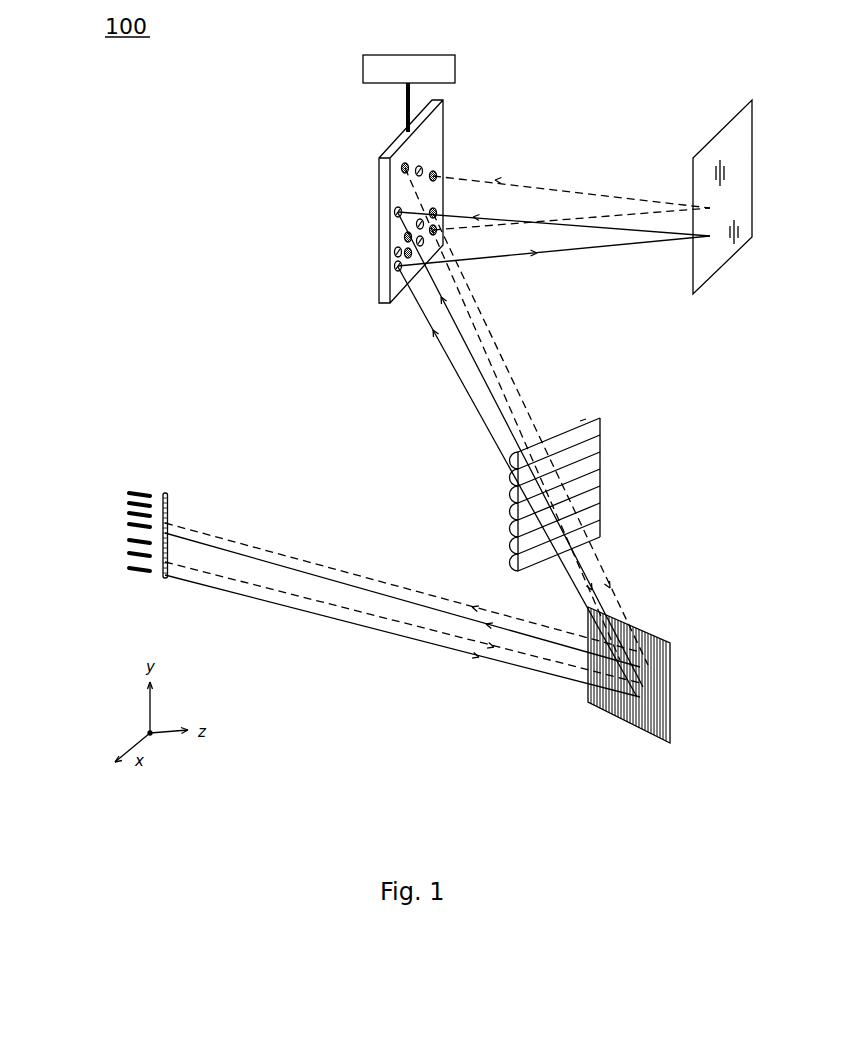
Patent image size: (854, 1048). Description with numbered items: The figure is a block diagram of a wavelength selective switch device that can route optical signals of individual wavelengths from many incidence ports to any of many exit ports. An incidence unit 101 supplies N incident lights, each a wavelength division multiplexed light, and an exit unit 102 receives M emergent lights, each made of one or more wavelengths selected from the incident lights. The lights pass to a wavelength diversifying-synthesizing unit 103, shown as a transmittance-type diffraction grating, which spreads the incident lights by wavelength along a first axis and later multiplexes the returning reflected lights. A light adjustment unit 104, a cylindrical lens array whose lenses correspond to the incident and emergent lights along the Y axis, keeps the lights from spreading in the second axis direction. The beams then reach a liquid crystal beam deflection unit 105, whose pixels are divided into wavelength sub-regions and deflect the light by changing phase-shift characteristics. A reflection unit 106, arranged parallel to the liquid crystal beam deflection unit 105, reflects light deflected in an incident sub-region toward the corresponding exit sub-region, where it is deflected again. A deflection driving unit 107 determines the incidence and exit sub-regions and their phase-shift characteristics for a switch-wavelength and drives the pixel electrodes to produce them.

The incidence unit 101 is at (122, 537).
The exit unit 102 is at (122, 490).
The wavelength diversifying-synthesizing unit 103 is at (652, 675).
The light adjustment unit 104 is at (582, 492).
The liquid crystal beam deflection unit 105 is at (386, 201).
The reflection unit 106 is at (717, 197).
The deflection driving unit 107 is at (409, 81).